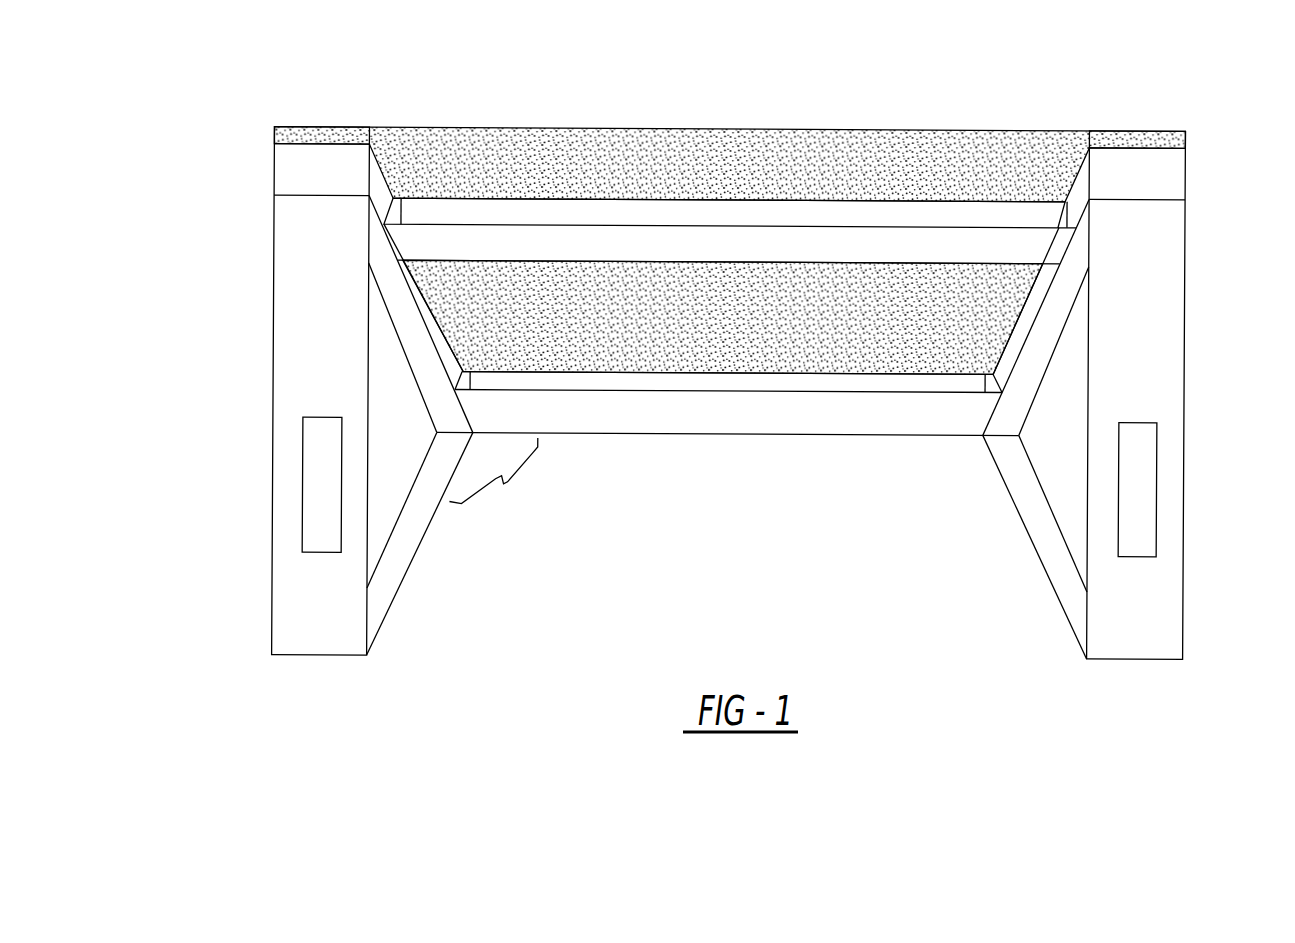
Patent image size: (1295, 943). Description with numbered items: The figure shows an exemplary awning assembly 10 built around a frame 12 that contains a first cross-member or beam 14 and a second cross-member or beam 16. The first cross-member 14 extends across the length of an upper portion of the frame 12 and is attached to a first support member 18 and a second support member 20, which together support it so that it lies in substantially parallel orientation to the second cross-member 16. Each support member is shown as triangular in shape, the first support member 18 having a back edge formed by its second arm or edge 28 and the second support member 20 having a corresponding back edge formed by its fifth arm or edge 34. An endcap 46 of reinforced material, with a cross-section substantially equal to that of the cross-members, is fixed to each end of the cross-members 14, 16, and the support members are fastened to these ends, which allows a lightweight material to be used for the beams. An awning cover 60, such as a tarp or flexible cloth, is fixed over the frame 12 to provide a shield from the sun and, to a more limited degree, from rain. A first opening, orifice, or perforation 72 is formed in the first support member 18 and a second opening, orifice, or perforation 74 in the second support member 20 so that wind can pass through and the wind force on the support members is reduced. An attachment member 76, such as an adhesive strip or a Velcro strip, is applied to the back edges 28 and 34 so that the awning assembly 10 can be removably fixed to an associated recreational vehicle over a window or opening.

The awning assembly 10 is at (703, 352).
The frame 12 is at (510, 492).
The first cross-member or beam 14 is at (955, 213).
The second cross-member or beam 16 is at (818, 416).
The first support member 18 is at (1142, 378).
The second support member 20 is at (297, 388).
The second arm or edge 28 is at (1116, 395).
The fifth arm or edge 34 is at (343, 400).
The endcap 46 is at (400, 204).
The awning cover 60 is at (770, 157).
The first opening, orifice, or perforation 72 is at (1068, 457).
The second opening, orifice, or perforation 74 is at (388, 498).
The attachment member 76 is at (303, 484).